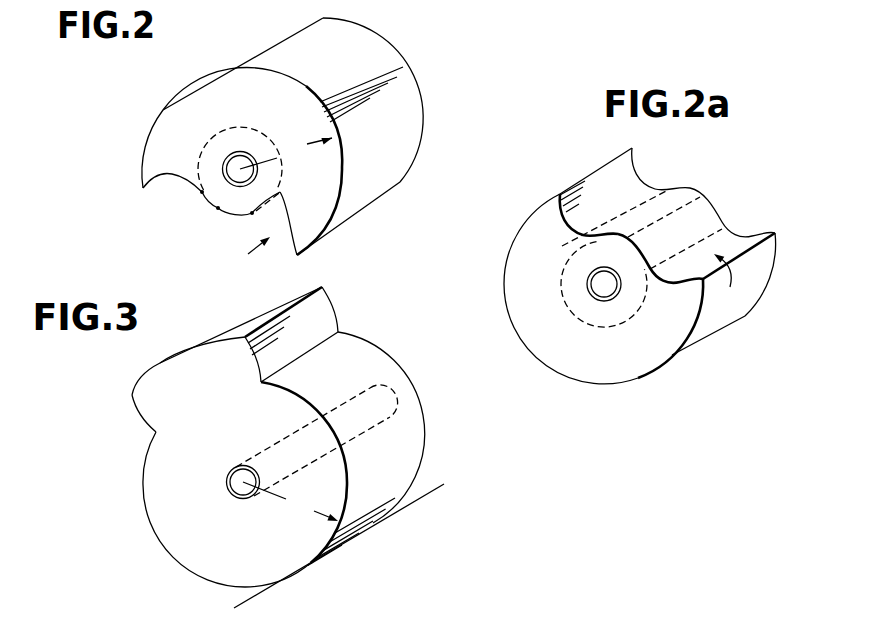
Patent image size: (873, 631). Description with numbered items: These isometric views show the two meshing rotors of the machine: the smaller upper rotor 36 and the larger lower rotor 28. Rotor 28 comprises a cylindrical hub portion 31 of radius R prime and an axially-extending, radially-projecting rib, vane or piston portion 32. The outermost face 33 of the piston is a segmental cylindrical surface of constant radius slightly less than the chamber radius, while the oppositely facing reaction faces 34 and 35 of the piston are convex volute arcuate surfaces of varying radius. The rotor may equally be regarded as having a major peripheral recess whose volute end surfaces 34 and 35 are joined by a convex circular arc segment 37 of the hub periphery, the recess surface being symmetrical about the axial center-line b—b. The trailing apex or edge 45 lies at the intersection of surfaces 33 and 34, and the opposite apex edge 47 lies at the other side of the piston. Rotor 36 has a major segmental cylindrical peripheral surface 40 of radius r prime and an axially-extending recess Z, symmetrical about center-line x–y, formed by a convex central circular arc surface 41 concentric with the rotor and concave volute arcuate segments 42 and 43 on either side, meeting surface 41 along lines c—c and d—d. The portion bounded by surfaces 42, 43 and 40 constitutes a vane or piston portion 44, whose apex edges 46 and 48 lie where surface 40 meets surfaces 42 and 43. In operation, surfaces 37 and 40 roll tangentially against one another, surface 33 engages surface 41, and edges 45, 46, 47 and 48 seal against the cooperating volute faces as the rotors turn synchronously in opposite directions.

In FIG. 3, the rotor 28 is at (170, 511).
In FIG. 3, the cylindrical hub portion 31 is at (193, 555).
In FIG. 3, the piston portion 32 is at (167, 372).
In FIG. 3, the outermost face 33 is at (247, 322).
In FIG. 3, the reaction face 34 is at (133, 417).
In FIG. 3, the reaction face 35 is at (307, 332).
In FIG. 2, the second rotor 36 is at (388, 55).
In FIG. 2a, the second rotor 36 is at (516, 290).
In FIG. 3, the convex circular arc segment 37 is at (423, 420).
In FIG. 2, the segmental cylindrical surface 40 is at (413, 137).
In FIG. 2a, the segmental cylindrical surface 40 is at (715, 316).
In FIG. 2, the convex central circular arc surface 41 is at (204, 196).
In FIG. 2a, the convex central circular arc surface 41 is at (706, 218).
In FIG. 2, the concave volute arcuate segment 42 is at (172, 179).
In FIG. 2a, the concave volute arcuate segment 42 is at (688, 271).
In FIG. 2, the concave volute arcuate segment 43 is at (285, 231).
In FIG. 2a, the concave volute arcuate segment 43 is at (582, 203).
In FIG. 2, the piston portion 44 is at (163, 110).
In FIG. 2a, the piston portion 44 is at (635, 363).
In FIG. 3, the trailing apex edge 45 is at (132, 396).
In FIG. 2, the trailing apex edge 46 is at (143, 188).
In FIG. 2a, the trailing apex edge 46 is at (752, 250).
In FIG. 2a, the trailing apex edge 47 is at (575, 177).
In FIG. 3, the trailing apex edge 47 is at (313, 297).
In FIG. 2, the trailing apex edge 48 is at (300, 257).